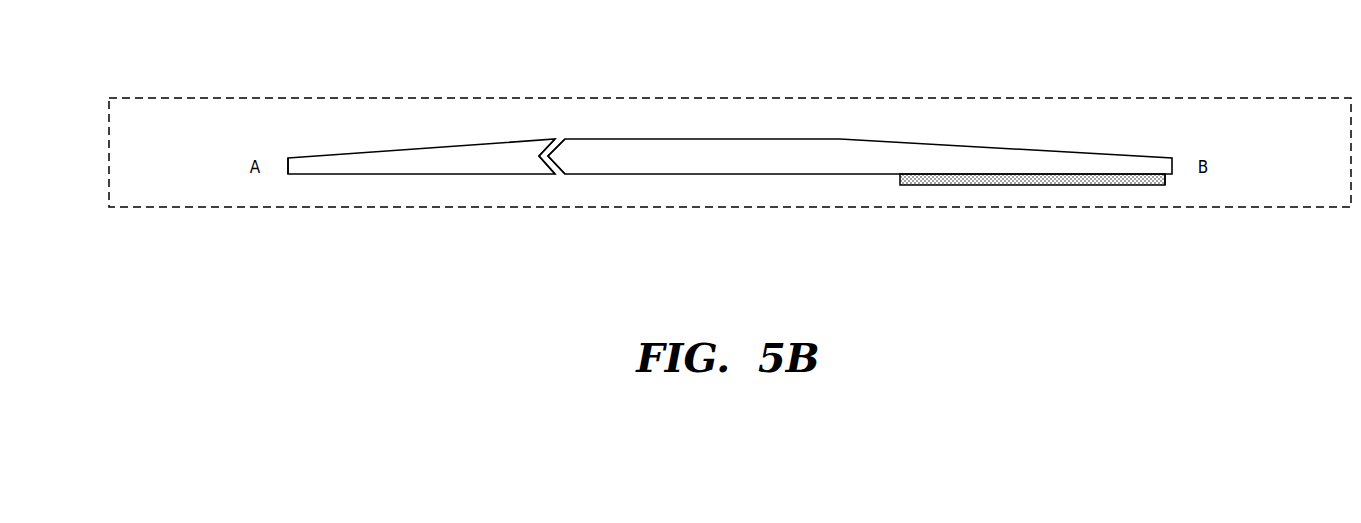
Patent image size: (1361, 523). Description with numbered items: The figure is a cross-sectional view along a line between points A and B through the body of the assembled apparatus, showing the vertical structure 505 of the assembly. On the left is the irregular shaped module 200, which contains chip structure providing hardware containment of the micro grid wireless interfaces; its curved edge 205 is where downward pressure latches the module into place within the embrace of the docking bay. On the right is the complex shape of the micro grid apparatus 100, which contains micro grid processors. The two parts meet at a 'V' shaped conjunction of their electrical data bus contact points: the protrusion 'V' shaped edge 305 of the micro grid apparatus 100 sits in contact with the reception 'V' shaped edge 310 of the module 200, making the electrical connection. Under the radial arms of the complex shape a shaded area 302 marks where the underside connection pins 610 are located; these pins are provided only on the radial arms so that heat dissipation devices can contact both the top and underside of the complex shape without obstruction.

The vertical structure 505 is at (142, 105).
The irregular shaped module 200 is at (402, 148).
The curved edge 205 is at (287, 166).
The reception 'V' shaped edge 310 is at (547, 154).
The micro grid apparatus 100 is at (840, 139).
The protrusion 'V' shaped edge 305 is at (561, 167).
The adhesive / friction layer 302 is at (922, 183).
The connection pins 610 is at (1157, 186).